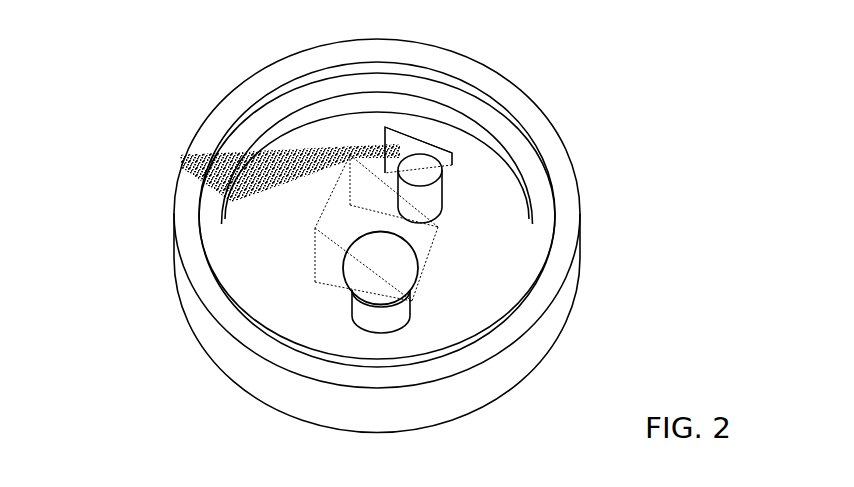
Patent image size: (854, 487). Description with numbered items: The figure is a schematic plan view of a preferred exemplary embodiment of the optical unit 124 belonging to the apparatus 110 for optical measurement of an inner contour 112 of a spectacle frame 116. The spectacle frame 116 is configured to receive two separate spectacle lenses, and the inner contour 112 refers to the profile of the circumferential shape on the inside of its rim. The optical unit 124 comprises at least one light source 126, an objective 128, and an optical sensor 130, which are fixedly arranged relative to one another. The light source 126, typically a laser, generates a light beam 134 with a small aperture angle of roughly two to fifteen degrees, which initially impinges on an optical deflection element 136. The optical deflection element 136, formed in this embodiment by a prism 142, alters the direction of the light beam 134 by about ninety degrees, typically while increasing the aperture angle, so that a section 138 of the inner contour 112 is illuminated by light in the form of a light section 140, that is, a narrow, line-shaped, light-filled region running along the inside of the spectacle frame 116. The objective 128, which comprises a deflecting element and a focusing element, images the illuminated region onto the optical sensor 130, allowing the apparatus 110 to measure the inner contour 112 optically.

The apparatus 110 is at (656, 200).
The inner contour 112 is at (230, 253).
The spectacle frame 116 is at (173, 290).
The optical unit 124 is at (641, 318).
The light source 126 is at (443, 207).
The objective 128 is at (407, 273).
The optical sensor 130 is at (410, 312).
The light beam 134 is at (303, 155).
The optical deflection element 136 is at (453, 153).
The section 138 is at (237, 152).
The light section 140 is at (303, 155).
The prism 142 is at (453, 153).